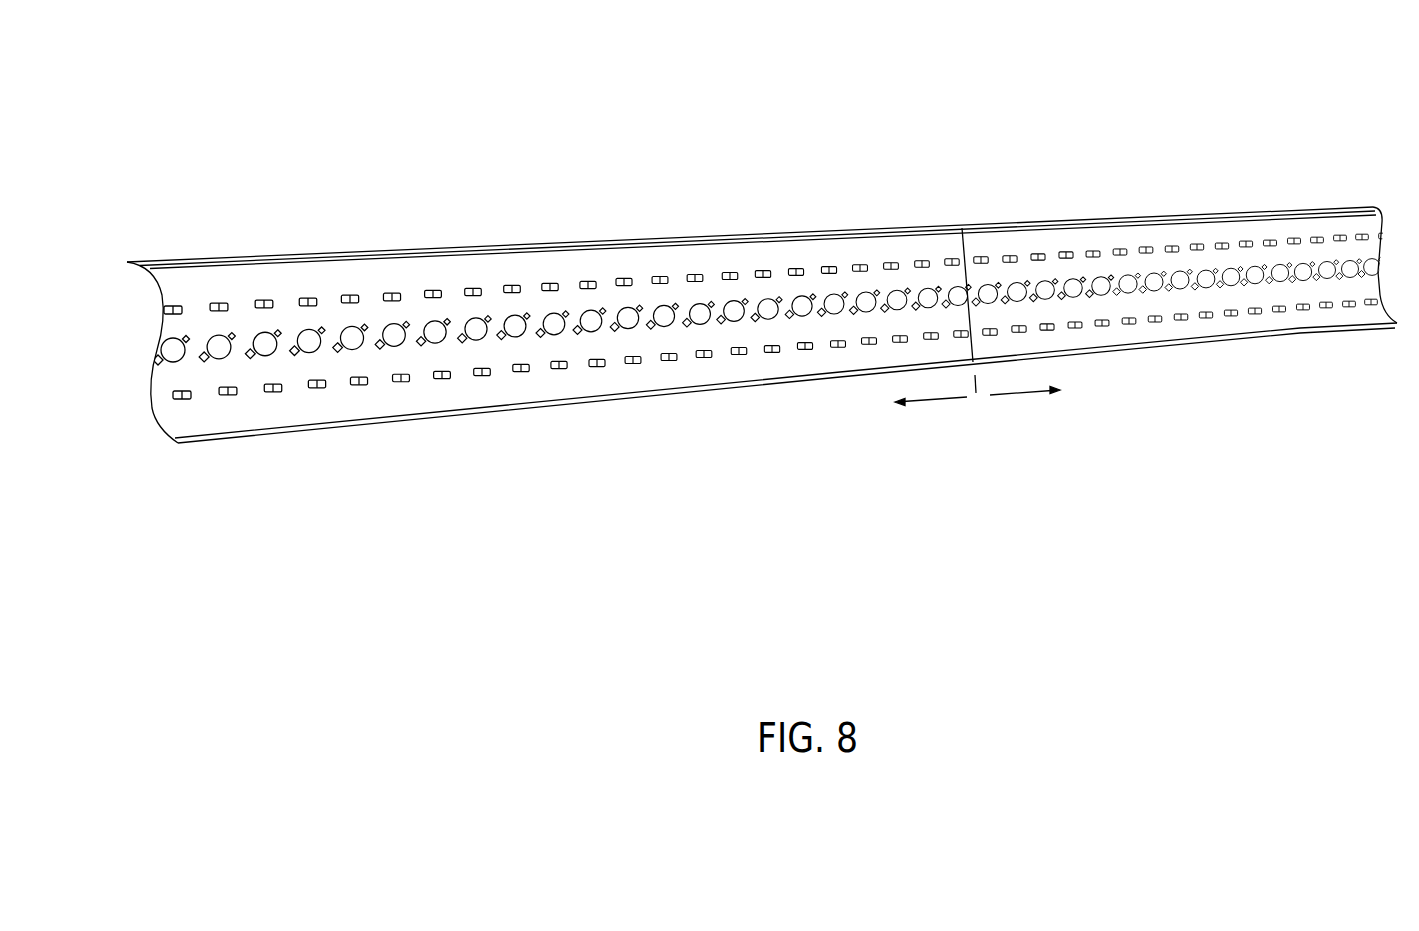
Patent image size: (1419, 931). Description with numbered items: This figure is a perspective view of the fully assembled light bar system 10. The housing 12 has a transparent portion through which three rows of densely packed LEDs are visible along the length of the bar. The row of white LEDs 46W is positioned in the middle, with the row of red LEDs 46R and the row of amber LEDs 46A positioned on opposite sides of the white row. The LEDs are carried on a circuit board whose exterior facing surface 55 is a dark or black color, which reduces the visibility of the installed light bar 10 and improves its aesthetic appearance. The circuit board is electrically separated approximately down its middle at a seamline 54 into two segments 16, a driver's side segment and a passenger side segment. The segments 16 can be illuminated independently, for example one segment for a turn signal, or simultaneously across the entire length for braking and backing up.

The light bar system 10 is at (522, 66).
The housing 12 is at (610, 232).
The exterior facing surface 55 is at (683, 292).
The red LEDs 46R is at (724, 275).
The white LEDs 46W is at (798, 296).
The amber LEDs 46A is at (884, 265).
The seamline 54 is at (992, 363).
The segments 16 is at (977, 395).